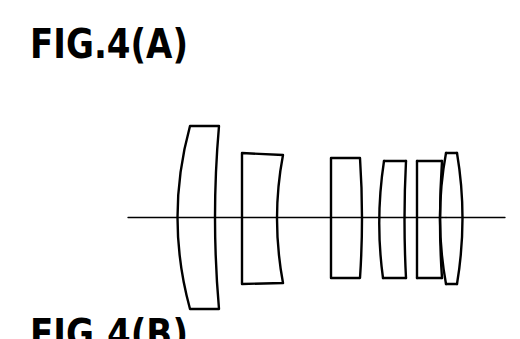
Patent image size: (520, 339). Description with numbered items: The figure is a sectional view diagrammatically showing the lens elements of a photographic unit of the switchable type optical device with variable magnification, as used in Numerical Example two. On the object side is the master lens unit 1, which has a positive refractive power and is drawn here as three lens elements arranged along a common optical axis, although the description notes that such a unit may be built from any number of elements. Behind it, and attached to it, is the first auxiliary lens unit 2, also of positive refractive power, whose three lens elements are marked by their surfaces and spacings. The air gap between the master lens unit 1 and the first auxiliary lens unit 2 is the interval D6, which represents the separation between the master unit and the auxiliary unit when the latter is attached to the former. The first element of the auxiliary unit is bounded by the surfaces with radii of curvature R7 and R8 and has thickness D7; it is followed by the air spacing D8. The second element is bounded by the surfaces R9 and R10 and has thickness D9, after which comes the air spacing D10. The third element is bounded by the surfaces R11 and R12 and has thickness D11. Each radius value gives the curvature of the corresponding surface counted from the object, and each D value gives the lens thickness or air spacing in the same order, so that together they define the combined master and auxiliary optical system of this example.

The master lens unit 1 is at (347, 97).
The first auxiliary lens unit 2 is at (514, 97).
The radius of curvature of the seventh lens surface R7 is at (383, 165).
The radius of curvature of the eighth lens surface R8 is at (403, 165).
The radius of curvature of the ninth lens surface R9 is at (419, 163).
The radius of curvature of the tenth lens surface R10 is at (440, 163).
The radius of curvature of the eleventh lens surface R11 is at (447, 160).
The radius of curvature of the twelfth lens surface R12 is at (458, 158).
The interval between master lens unit and auxiliary lens unit D6 is at (376, 222).
The lens thickness of the fourth lens D7 is at (394, 222).
The air spacing after the fourth lens D8 is at (412, 222).
The lens thickness of the fifth lens D9 is at (430, 222).
The air spacing after the fifth lens D10 is at (448, 224).
The lens thickness of the sixth lens D11 is at (458, 238).